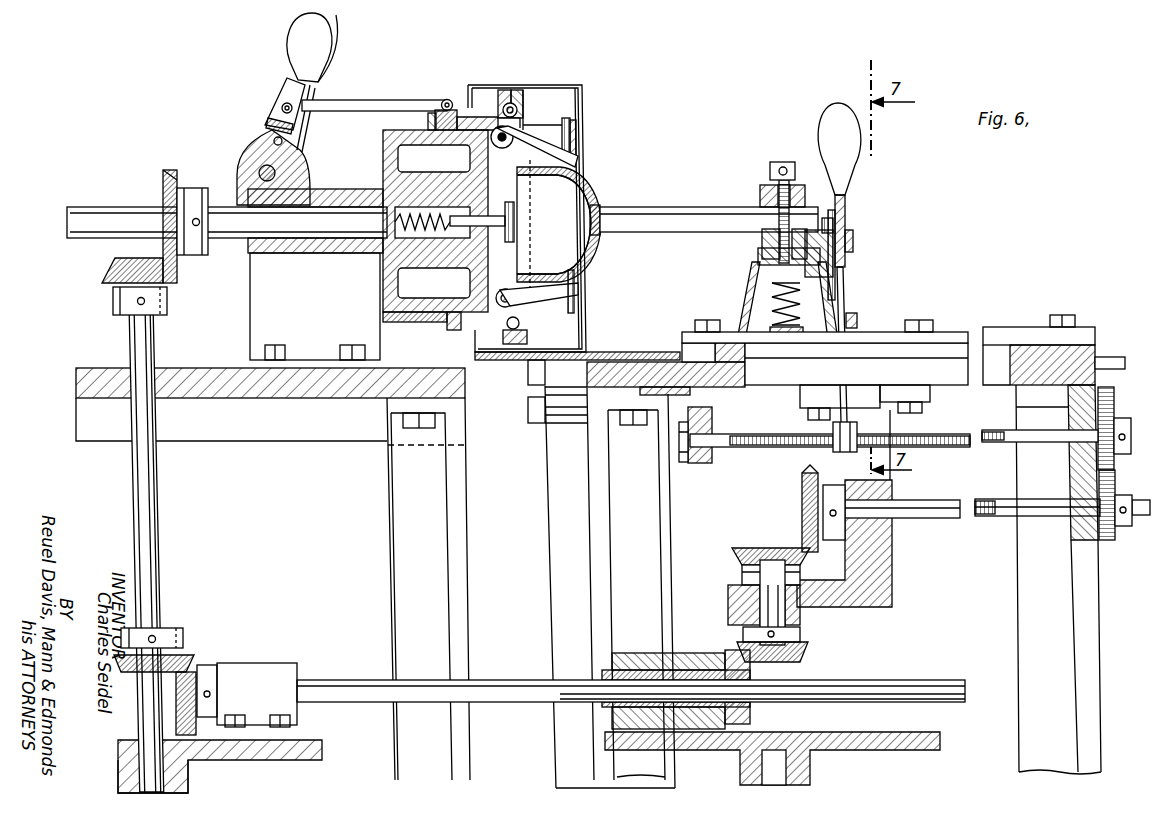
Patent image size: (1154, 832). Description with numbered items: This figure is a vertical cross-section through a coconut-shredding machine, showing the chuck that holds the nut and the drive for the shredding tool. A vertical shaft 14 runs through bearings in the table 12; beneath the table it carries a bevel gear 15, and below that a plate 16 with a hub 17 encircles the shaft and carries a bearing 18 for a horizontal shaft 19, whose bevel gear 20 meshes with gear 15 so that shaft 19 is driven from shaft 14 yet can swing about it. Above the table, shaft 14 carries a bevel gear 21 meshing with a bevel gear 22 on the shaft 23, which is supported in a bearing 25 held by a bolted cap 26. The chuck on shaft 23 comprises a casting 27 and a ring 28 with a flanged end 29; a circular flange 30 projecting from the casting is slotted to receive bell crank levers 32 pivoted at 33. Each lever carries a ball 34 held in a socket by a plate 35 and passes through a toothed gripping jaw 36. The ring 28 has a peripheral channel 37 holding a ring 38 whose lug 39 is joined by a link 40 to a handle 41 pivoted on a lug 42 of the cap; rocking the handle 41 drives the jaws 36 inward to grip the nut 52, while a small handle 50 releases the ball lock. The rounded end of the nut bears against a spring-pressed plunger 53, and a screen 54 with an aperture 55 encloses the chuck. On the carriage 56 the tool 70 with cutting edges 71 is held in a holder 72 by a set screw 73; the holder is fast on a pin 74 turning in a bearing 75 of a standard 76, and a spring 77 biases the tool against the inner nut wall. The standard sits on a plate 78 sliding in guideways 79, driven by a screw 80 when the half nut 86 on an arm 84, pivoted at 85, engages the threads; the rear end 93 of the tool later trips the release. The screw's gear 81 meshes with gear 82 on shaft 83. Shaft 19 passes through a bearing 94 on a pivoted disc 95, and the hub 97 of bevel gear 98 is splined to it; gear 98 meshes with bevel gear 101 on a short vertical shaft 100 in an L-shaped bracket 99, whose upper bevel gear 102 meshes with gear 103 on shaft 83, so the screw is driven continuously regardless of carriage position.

The table 12 is at (90, 368).
The vertical shaft 14 is at (158, 345).
The bevel gear 15 is at (183, 640).
The plate 16 is at (305, 760).
The hub 17 is at (188, 780).
The bearing 18 is at (272, 675).
The horizontal shaft 19 is at (350, 674).
The bevel gear 20 is at (196, 665).
The bevel gear 21 is at (167, 302).
The bevel gear 22 is at (180, 270).
The shaft 23 is at (104, 212).
The bearing 25 is at (258, 326).
The cap 26 is at (312, 190).
The casting 27 is at (383, 174).
The ring 28 is at (470, 116).
The flanged end 29 is at (508, 103).
The circular flange 30 is at (537, 140).
The bell crank lever 32 is at (540, 152).
The pivot 33 is at (504, 148).
The ball 34 is at (522, 100).
The plate 35 is at (518, 90).
The gripping jaw 36 is at (575, 118).
The peripheral channel 37 is at (430, 112).
The ring 38 is at (450, 108).
The lug 39 is at (445, 100).
The link 40 is at (360, 100).
The handle 41 is at (290, 88).
The lug 42 is at (237, 170).
The handle 50 is at (340, 42).
The nut 52 is at (578, 235).
The spring-pressed plunger 53 is at (508, 242).
The screen 54 is at (565, 84).
The aperture 55 is at (582, 290).
The carriage 56 is at (1024, 630).
The tool 70 is at (690, 212).
The cutting edges 71 is at (596, 200).
The holder 72 is at (760, 190).
The set screw 73 is at (780, 162).
The pin 74 is at (762, 248).
The bearing 75 is at (762, 266).
The standard 76 is at (834, 298).
The spring 77 is at (750, 290).
The plate 78 is at (735, 355).
The guideways 79 is at (1018, 328).
The screw 80 is at (772, 433).
The gear 81 is at (1115, 400).
The gear 82 is at (1108, 541).
The shaft 83 is at (995, 520).
The arm 84 is at (848, 272).
The pivot 85 is at (858, 318).
The half nut 86 is at (855, 420).
The rear end 93 is at (825, 216).
The bearing 94 is at (685, 650).
The disc 95 is at (875, 750).
The hub 97 is at (602, 670).
The bevel gear 98 is at (740, 655).
The L-shaped bracket 99 is at (894, 563).
The vertical shaft 100 is at (760, 600).
The bevel gear 101 is at (808, 650).
The bevel gear 102 is at (738, 555).
The bevel gear 103 is at (802, 484).